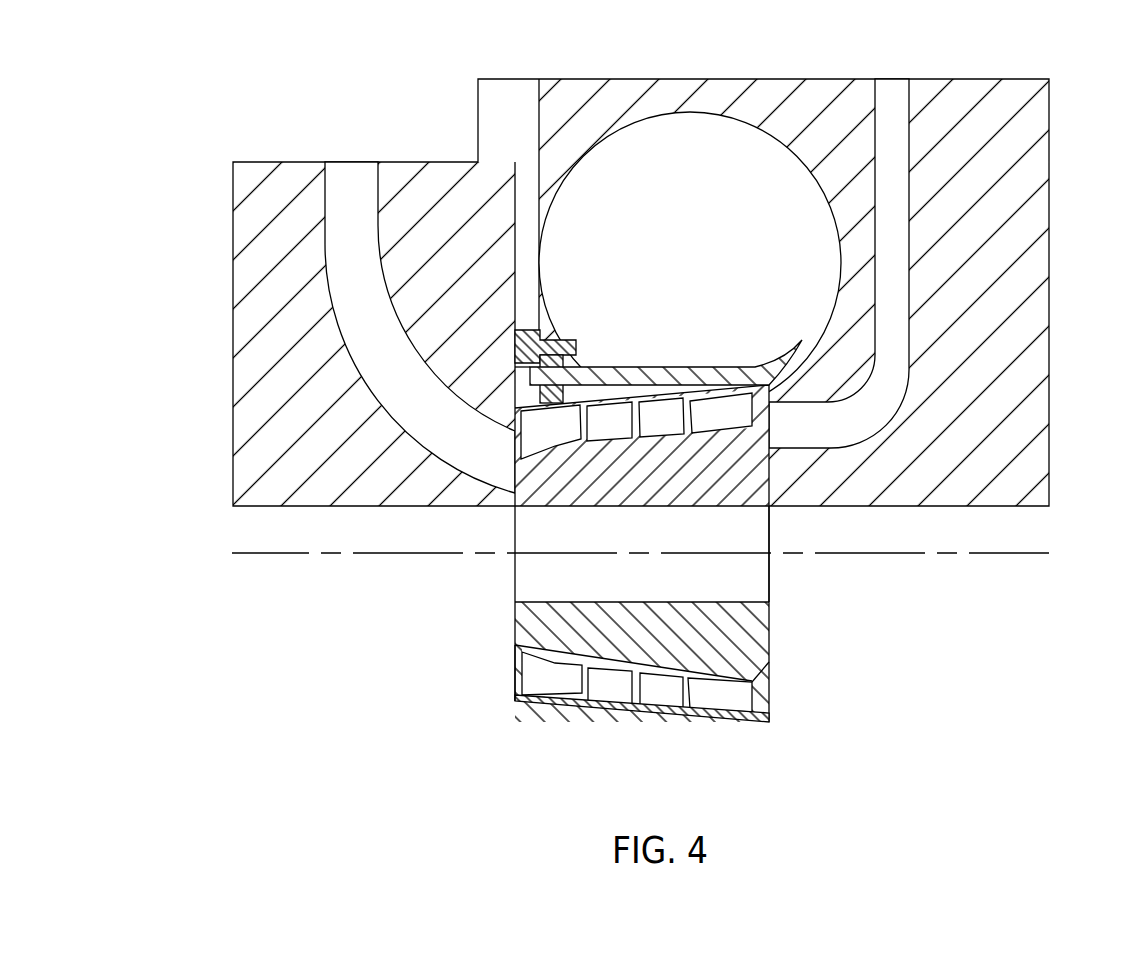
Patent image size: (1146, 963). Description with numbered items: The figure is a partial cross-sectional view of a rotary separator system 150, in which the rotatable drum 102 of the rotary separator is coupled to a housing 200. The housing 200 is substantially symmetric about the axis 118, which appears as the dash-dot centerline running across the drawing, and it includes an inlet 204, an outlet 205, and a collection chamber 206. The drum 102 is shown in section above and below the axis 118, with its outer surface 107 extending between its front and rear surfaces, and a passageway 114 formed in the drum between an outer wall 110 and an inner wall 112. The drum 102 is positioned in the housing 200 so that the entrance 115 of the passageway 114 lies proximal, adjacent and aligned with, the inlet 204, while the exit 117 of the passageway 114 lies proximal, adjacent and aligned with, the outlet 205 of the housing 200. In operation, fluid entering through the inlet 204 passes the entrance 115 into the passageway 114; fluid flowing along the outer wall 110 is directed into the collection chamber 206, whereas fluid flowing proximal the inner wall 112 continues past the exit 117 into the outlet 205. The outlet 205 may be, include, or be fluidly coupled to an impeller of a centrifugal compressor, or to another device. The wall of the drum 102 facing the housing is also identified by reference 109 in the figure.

The rotary separator system 150 is at (589, 43).
The housing 200 is at (1007, 215).
The inlet 204 is at (363, 315).
The outlet 205 is at (893, 318).
The collection chamber 206 is at (708, 248).
The rotatable drum 102 is at (730, 647).
The side wall 109 is at (784, 528).
The axis 118 is at (1018, 553).
The passageway 114 is at (536, 673).
The entrance 115 is at (490, 697).
The exit 117 is at (782, 692).
The outer wall 110 is at (610, 708).
The inner wall 112 is at (660, 673).
The outer surface 107 is at (727, 722).